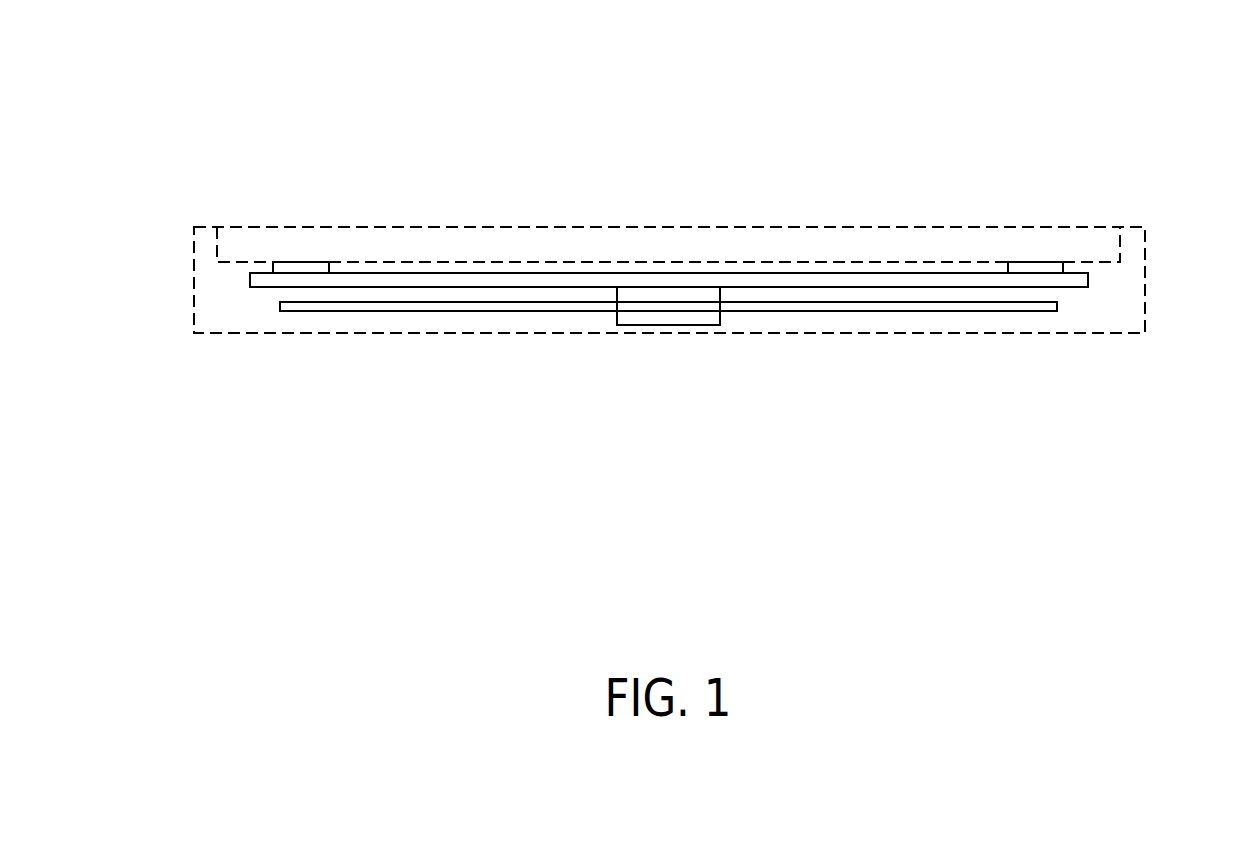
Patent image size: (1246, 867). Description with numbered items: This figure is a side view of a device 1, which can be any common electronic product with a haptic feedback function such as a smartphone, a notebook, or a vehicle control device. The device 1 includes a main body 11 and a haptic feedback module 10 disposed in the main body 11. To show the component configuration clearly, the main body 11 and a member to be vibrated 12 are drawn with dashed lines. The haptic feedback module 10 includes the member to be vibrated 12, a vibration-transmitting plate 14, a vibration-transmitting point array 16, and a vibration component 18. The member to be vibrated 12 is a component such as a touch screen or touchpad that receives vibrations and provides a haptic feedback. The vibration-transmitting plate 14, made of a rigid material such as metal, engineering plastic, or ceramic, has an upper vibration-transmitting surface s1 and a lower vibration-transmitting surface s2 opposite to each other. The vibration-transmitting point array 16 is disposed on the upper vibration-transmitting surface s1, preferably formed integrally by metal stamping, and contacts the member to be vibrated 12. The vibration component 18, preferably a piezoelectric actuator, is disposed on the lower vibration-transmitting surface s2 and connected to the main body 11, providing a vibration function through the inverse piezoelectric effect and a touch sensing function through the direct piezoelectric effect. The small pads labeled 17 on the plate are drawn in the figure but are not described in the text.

The device 1 is at (185, 122).
The haptic feedback module 10 is at (1079, 298).
The main body 11 is at (1150, 242).
The member to be vibrated 12 is at (977, 241).
The vibration-transmitting plate 14 is at (262, 287).
The vibration-transmitting point array 16 is at (287, 261).
The antenna pad 17 is at (305, 262).
The vibration component 18 is at (1003, 311).
The upper vibration-transmitting surface s1 is at (462, 273).
The lower vibration-transmitting surface s2 is at (462, 287).